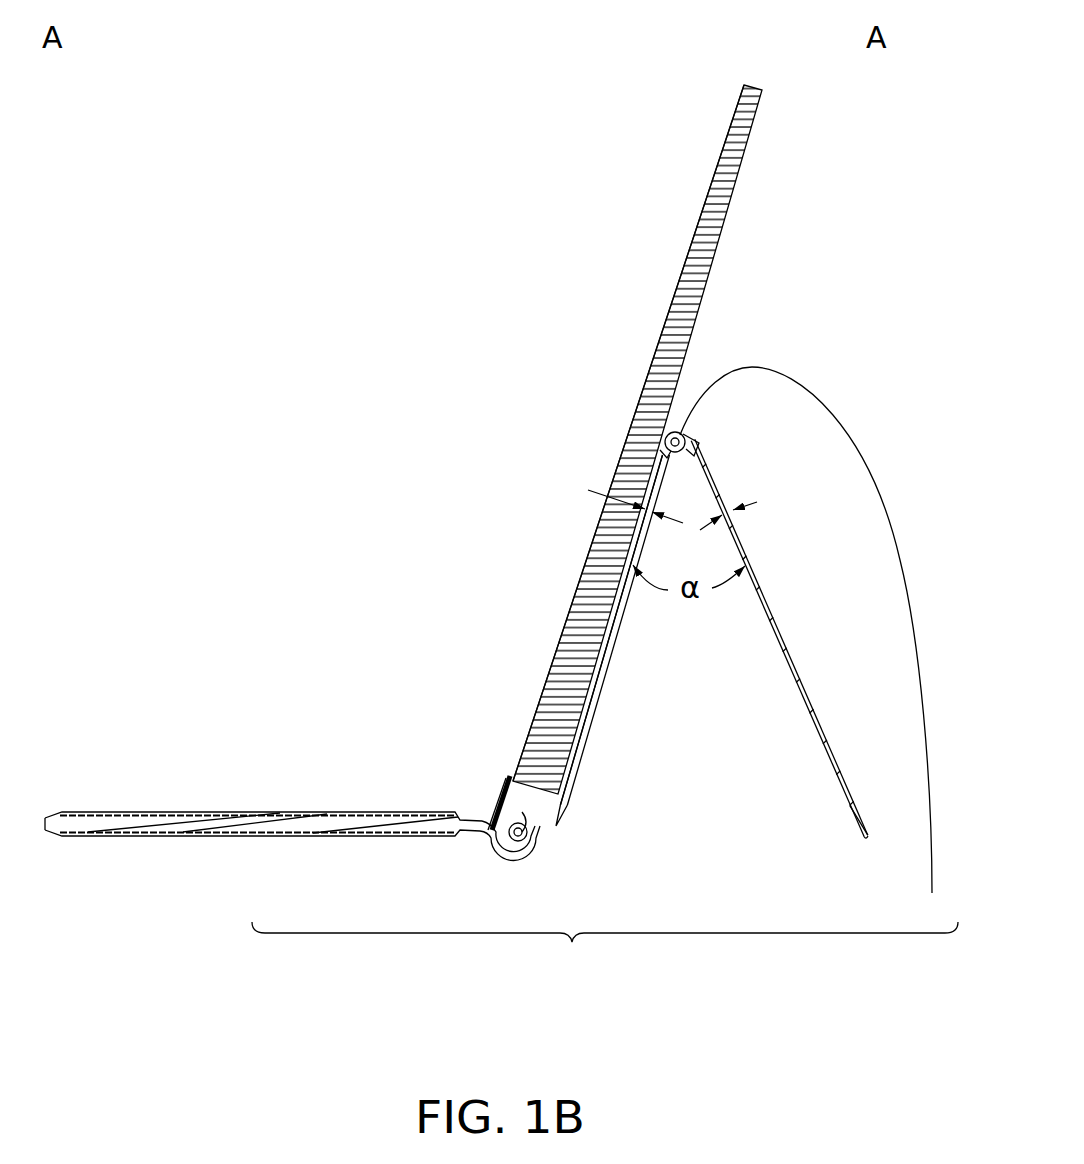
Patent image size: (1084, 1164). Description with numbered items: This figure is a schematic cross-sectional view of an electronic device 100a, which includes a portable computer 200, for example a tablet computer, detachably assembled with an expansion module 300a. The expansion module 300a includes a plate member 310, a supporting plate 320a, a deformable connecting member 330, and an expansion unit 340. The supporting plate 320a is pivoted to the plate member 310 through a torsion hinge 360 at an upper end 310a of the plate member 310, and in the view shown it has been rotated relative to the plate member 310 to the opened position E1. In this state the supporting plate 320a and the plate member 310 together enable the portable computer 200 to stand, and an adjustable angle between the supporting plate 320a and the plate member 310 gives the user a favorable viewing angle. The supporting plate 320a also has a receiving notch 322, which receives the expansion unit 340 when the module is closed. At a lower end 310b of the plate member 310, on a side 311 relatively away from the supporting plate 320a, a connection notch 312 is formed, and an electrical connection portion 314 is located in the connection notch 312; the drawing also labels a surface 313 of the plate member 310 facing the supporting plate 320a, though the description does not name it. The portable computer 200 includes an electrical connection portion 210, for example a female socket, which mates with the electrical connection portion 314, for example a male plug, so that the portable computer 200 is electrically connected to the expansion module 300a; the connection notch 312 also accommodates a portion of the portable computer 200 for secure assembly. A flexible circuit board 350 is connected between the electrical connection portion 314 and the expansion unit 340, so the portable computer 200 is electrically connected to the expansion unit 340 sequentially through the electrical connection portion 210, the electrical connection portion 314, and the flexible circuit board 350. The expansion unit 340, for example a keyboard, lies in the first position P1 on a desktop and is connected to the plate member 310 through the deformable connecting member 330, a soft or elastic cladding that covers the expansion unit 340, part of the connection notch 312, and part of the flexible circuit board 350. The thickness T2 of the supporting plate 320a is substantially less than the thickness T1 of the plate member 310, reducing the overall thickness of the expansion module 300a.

The electronic device 100a is at (722, 984).
The portable computer 200 is at (745, 141).
The electrical connection portion 210 is at (545, 800).
The expansion module 300a is at (605, 952).
The plate member 310 is at (594, 682).
The upper end 310a is at (668, 436).
The lower end 310b is at (545, 831).
The side 311 is at (618, 548).
The connection notch 312 is at (508, 776).
The second surface 313 is at (624, 598).
The electrical connection portion 314 is at (498, 792).
The supporting plate 320a is at (858, 788).
The receiving notch 322 is at (857, 830).
The deformable connecting member 330 is at (490, 822).
The expansion unit 340 is at (270, 828).
The flexible circuit board 350 is at (493, 833).
The torsion hinge 360 is at (818, 648).
The thickness of the plate member T1 is at (645, 506).
The thickness of the supporting plate T2 is at (722, 497).
The opened position E1 is at (748, 430).
The first position P1 is at (148, 795).